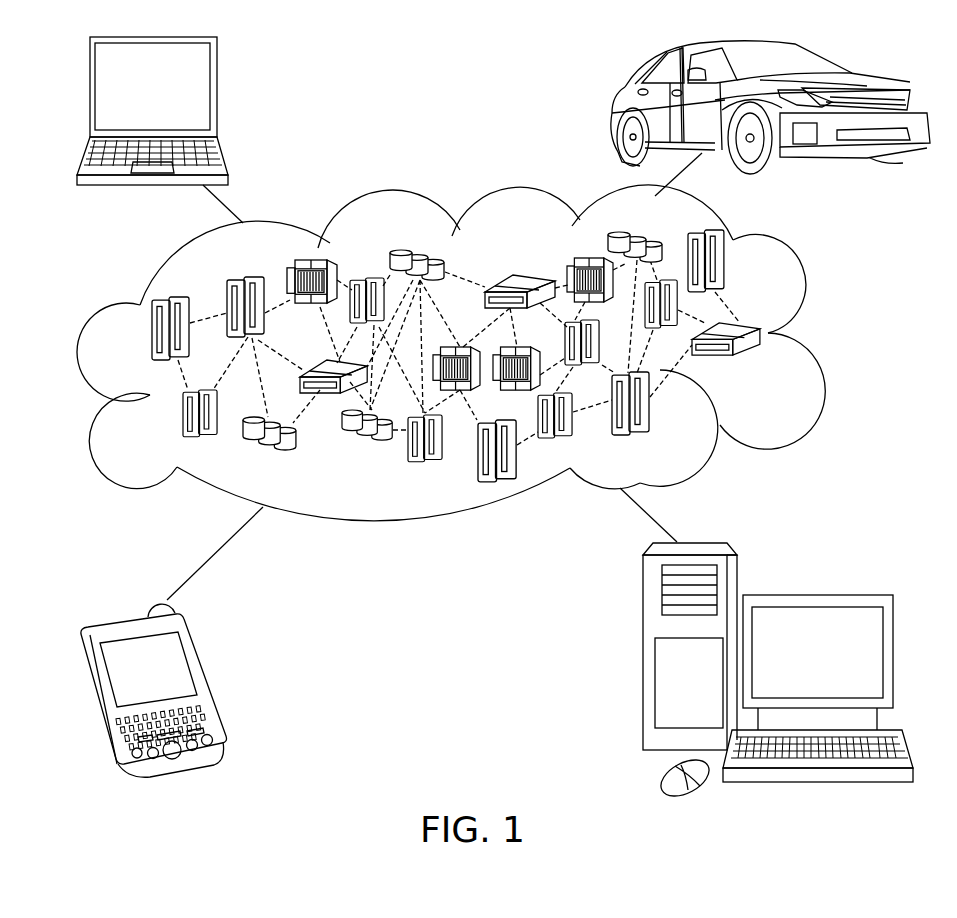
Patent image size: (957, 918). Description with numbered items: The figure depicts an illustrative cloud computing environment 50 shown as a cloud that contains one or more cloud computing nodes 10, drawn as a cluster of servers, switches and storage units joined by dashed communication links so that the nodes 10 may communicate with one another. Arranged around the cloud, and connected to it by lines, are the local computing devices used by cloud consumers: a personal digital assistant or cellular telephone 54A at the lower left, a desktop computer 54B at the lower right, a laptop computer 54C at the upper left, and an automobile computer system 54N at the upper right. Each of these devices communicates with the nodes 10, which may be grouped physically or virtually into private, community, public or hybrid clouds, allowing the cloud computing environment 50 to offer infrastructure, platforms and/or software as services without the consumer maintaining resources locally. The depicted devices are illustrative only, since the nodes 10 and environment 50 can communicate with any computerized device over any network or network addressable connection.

The cloud computing nodes 10 is at (505, 356).
The cloud computing environment 50 is at (813, 335).
The personal digital assistant (PDA) or cellular telephone 54A is at (207, 680).
The desktop computer 54B is at (813, 592).
The laptop computer 54C is at (218, 93).
The automobile computer system 54N is at (615, 107).